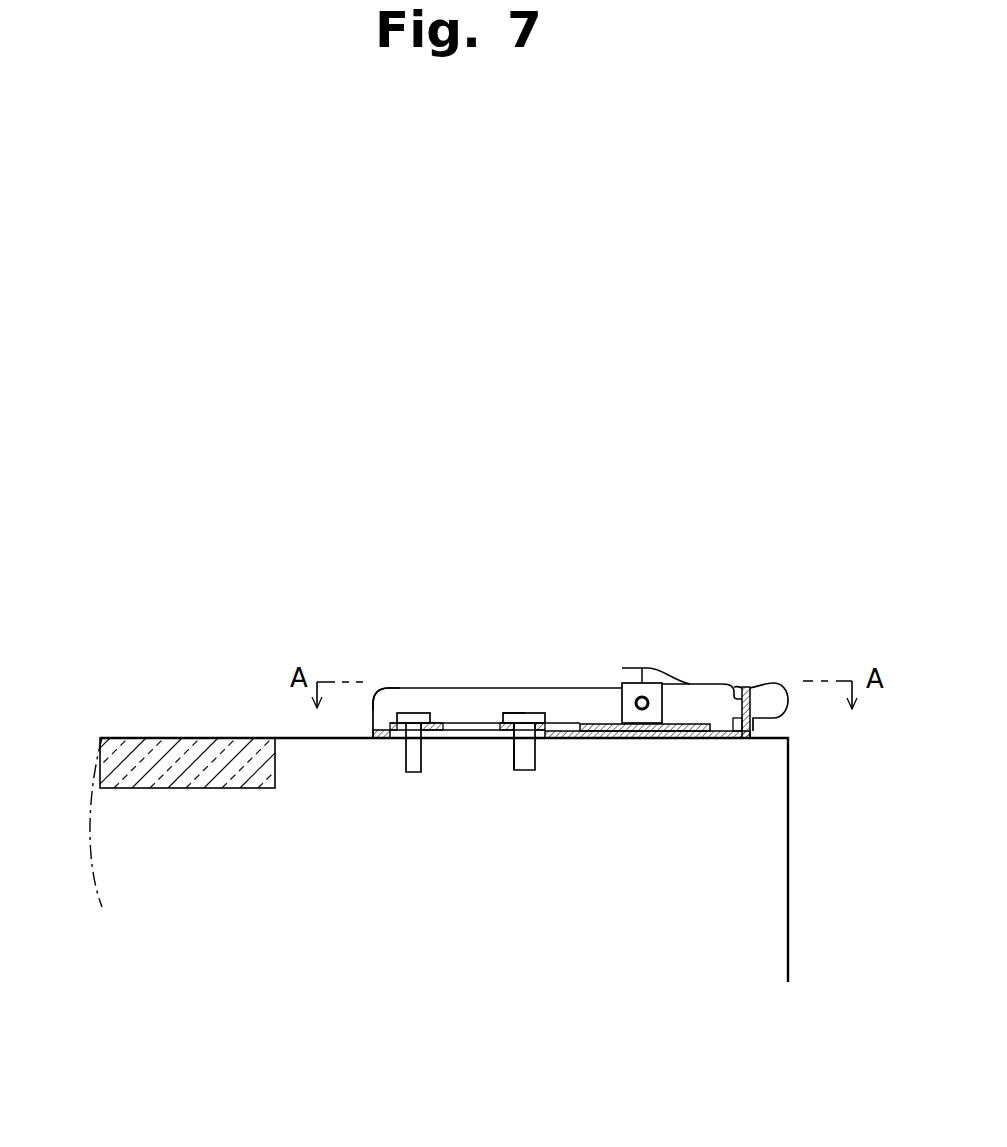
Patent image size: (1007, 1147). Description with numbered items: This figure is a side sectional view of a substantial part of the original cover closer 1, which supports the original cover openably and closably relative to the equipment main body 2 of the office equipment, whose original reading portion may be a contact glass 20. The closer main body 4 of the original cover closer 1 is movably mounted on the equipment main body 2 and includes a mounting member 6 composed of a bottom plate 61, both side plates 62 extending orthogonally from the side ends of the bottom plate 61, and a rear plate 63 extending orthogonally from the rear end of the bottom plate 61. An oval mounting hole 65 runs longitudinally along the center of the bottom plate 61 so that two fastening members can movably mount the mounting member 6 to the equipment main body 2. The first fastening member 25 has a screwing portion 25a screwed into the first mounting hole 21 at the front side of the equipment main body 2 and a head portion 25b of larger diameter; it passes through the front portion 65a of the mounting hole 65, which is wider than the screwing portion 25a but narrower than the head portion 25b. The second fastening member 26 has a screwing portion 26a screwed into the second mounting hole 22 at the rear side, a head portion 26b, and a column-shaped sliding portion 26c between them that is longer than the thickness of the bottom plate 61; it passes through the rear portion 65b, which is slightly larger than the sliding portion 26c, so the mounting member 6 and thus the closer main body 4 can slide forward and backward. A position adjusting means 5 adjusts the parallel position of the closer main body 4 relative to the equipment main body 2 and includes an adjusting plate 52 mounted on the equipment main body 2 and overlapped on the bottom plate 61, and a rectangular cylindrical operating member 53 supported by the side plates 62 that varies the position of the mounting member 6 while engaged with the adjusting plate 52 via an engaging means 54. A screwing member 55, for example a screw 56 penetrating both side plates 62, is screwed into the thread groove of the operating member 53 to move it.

The original cover closer 1 is at (806, 644).
The equipment main body 2 is at (752, 931).
The closer main body 4 is at (789, 713).
The position adjusting means 5 is at (672, 670).
The mounting member 6 is at (391, 686).
The contact glass 20 is at (120, 758).
The first mounting hole 21 is at (405, 765).
The second mounting hole 22 is at (514, 769).
The first fastening member 25 is at (436, 727).
The screwing portion 25a is at (417, 772).
The head portion 25b is at (429, 714).
The second fastening member 26 is at (588, 727).
The screwing portion 26a is at (527, 771).
The head portion 26b is at (547, 716).
The sliding portion 26c is at (525, 713).
The adjusting plate 52 is at (373, 713).
The operating member 53 is at (661, 672).
The engaging means 54 is at (669, 745).
The screwing member 55 is at (652, 703).
The screw 56 is at (648, 740).
The bottom plate 61 is at (623, 740).
The side plate 62 is at (493, 688).
The rear plate 63 is at (744, 684).
The mounting hole 65 is at (472, 740).
The front portion 65a is at (402, 740).
The rear portion 65b is at (545, 740).